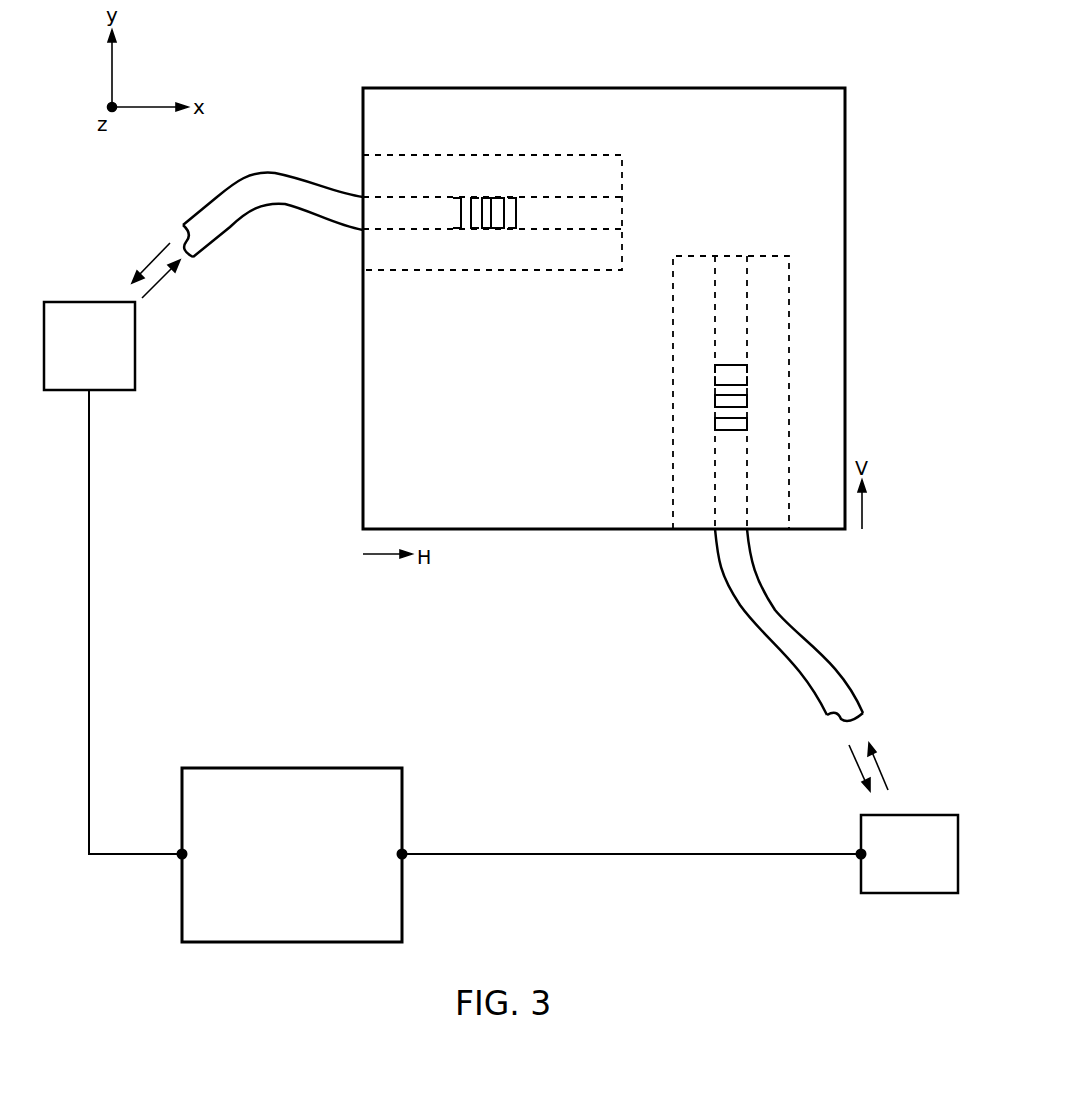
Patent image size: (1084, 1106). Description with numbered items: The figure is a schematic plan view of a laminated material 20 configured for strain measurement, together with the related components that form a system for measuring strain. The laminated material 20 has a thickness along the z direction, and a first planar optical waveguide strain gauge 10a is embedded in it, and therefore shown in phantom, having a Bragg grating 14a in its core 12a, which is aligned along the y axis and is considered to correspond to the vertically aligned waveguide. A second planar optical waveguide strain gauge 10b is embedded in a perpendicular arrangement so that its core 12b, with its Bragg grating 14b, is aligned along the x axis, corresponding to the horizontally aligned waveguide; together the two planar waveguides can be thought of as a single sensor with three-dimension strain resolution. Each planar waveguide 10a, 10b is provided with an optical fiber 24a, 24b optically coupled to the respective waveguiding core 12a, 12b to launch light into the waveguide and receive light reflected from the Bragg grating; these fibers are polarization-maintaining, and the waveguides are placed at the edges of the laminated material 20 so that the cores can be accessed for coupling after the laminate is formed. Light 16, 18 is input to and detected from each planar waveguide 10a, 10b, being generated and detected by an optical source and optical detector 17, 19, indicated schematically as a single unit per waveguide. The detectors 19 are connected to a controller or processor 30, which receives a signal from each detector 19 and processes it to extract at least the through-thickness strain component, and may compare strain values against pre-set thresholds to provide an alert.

The laminated material 20 is at (803, 110).
The first planar optical waveguide strain gauge 10a is at (782, 287).
The second planar optical waveguide strain gauge 10b is at (585, 163).
The core 12a is at (735, 350).
The core 12b is at (415, 217).
The Bragg grating 14a is at (747, 410).
The Bragg grating 14b is at (485, 197).
The optical fiber 24a is at (835, 656).
The optical fiber 24b is at (230, 230).
The light 16 is at (160, 283).
The light 18 is at (854, 763).
The optical source 17 is at (122, 390).
The optical detector 19 is at (919, 893).
The controller or processor 30 is at (292, 855).